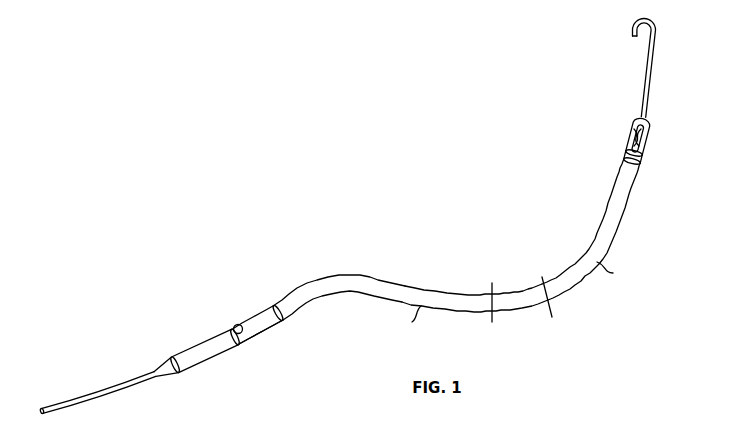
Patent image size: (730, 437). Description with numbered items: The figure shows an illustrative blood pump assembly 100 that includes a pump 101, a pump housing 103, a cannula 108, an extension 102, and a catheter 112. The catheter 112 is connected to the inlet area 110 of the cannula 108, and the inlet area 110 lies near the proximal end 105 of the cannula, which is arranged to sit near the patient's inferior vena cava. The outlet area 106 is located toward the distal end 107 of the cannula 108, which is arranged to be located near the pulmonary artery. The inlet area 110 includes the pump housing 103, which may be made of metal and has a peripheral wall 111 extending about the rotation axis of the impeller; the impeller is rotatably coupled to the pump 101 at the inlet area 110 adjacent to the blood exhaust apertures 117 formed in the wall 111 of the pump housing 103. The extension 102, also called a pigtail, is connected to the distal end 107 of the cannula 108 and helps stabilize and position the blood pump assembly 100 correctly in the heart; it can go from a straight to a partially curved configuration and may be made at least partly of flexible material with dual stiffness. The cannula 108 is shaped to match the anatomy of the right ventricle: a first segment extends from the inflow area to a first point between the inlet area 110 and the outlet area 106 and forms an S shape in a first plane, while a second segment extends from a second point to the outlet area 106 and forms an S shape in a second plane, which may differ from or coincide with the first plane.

The blood pump assembly 100 is at (180, 171).
The pump 101 is at (233, 328).
The extension 102 is at (655, 43).
The pump housing 103 is at (257, 320).
The proximal end 105 is at (305, 292).
The outlet area 106 is at (641, 160).
The distal end 107 is at (630, 200).
The cannula 108 is at (465, 294).
The inlet area 110 is at (193, 348).
The peripheral wall 111 is at (265, 332).
The catheter 112 is at (85, 403).
The blood exhaust apertures 117 is at (247, 338).